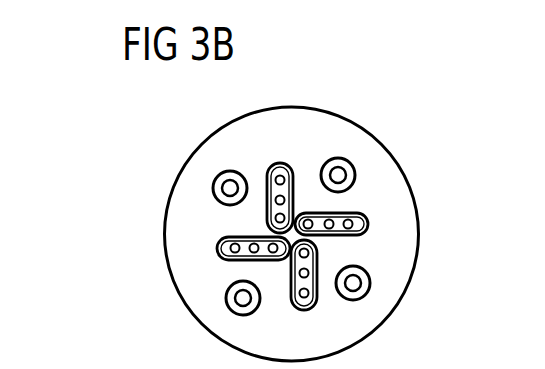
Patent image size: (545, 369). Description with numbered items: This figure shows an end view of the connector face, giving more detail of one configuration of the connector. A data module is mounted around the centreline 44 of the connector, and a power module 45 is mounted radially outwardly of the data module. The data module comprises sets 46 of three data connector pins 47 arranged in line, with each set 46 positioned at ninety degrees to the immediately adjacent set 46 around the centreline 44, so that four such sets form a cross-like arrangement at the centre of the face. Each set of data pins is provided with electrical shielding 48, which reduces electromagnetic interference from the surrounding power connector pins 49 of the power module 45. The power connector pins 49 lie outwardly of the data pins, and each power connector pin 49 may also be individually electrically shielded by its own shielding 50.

The centreline 44 is at (292, 236).
The power module 45 is at (304, 275).
The set of data connector pins 46 is at (278, 163).
The data connector pins 47 is at (308, 224).
The electrical shielding 48 is at (231, 259).
The power connector pin 49 is at (230, 188).
The shielding 50 is at (350, 159).